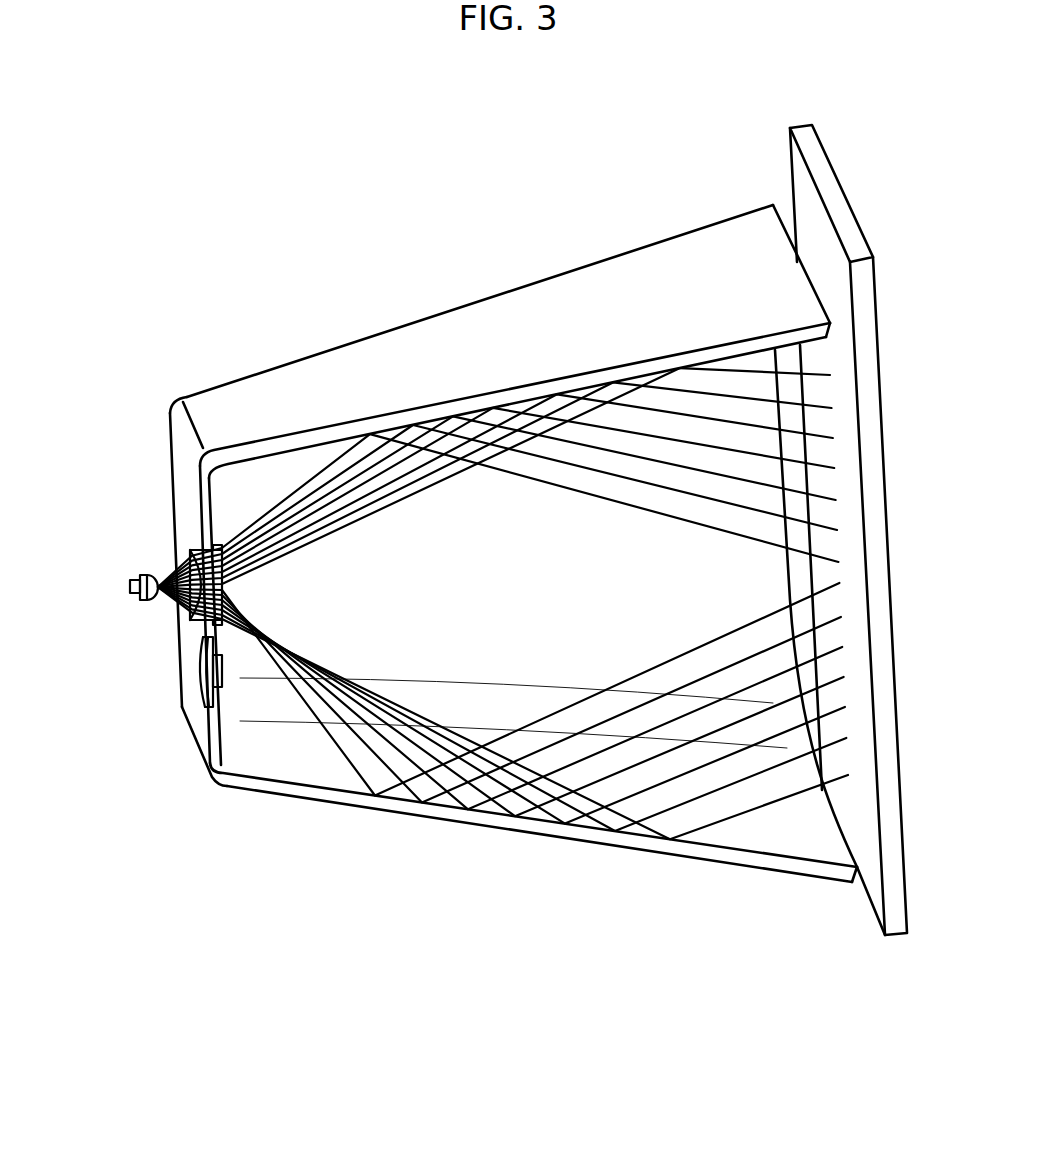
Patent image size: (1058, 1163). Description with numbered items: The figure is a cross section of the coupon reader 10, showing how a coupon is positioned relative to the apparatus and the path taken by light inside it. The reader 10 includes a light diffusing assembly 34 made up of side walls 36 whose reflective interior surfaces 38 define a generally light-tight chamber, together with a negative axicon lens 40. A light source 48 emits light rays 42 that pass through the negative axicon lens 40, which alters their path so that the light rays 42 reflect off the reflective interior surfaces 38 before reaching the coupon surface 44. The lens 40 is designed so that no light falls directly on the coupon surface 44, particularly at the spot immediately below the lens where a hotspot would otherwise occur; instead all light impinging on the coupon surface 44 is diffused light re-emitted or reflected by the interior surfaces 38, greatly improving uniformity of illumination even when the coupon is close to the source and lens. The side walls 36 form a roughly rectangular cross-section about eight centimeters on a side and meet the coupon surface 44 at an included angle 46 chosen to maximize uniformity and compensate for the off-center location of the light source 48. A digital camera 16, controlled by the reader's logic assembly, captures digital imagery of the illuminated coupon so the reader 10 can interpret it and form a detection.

The coupon reader 10 is at (373, 278).
The digital camera 16 is at (205, 678).
The light diffusing assembly 34 is at (182, 400).
The side walls 36 is at (532, 312).
The reflective interior surfaces 38 is at (297, 763).
The negative axicon lens 40 is at (190, 552).
The light rays 42 is at (718, 822).
The coupon surface 44 is at (851, 480).
The included angle 46 is at (825, 855).
The light source 48 is at (133, 574).